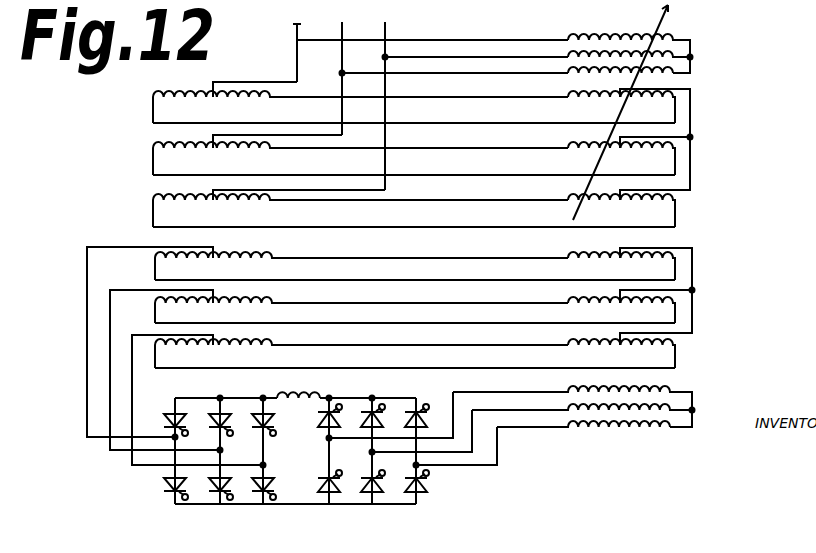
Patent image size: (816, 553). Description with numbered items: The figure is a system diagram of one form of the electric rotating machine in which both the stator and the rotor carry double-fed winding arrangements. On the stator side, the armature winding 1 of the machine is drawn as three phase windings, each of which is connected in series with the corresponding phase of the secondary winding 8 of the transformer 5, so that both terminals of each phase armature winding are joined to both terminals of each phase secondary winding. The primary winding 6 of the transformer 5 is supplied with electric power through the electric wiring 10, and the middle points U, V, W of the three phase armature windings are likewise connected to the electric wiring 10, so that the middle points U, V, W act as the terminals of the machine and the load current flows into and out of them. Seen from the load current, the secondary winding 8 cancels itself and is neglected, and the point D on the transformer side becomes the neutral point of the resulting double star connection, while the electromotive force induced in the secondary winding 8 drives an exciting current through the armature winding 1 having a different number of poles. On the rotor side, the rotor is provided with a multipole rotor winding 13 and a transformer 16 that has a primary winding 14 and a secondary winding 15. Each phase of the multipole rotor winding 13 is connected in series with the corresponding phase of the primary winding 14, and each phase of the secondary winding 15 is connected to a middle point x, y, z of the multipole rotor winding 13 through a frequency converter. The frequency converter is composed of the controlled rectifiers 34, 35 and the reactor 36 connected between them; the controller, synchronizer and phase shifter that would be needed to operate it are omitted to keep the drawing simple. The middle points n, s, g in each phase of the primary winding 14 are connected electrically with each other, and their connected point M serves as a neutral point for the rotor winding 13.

The electric wiring 10 is at (430, 96).
The primary winding 6 is at (673, 34).
The secondary winding 8 is at (675, 100).
The point D is at (692, 138).
The transformer 5 is at (643, 210).
The middle point U is at (213, 96).
The armature winding 1 is at (157, 95).
The middle point V is at (213, 148).
The middle point W is at (213, 200).
The multipole rotor winding 13 is at (156, 258).
The middle point x is at (213, 257).
The middle point y is at (213, 297).
The middle point z is at (213, 343).
The primary winding 14 is at (675, 258).
The middle point g is at (620, 257).
The middle point s is at (620, 297).
The connected point M is at (692, 290).
The middle point n is at (620, 343).
The transformer 16 is at (738, 323).
The secondary winding 15 is at (672, 387).
The controlled rectifier 34 is at (196, 394).
The controlled rectifier 35 is at (383, 397).
The reactor 36 is at (298, 408).